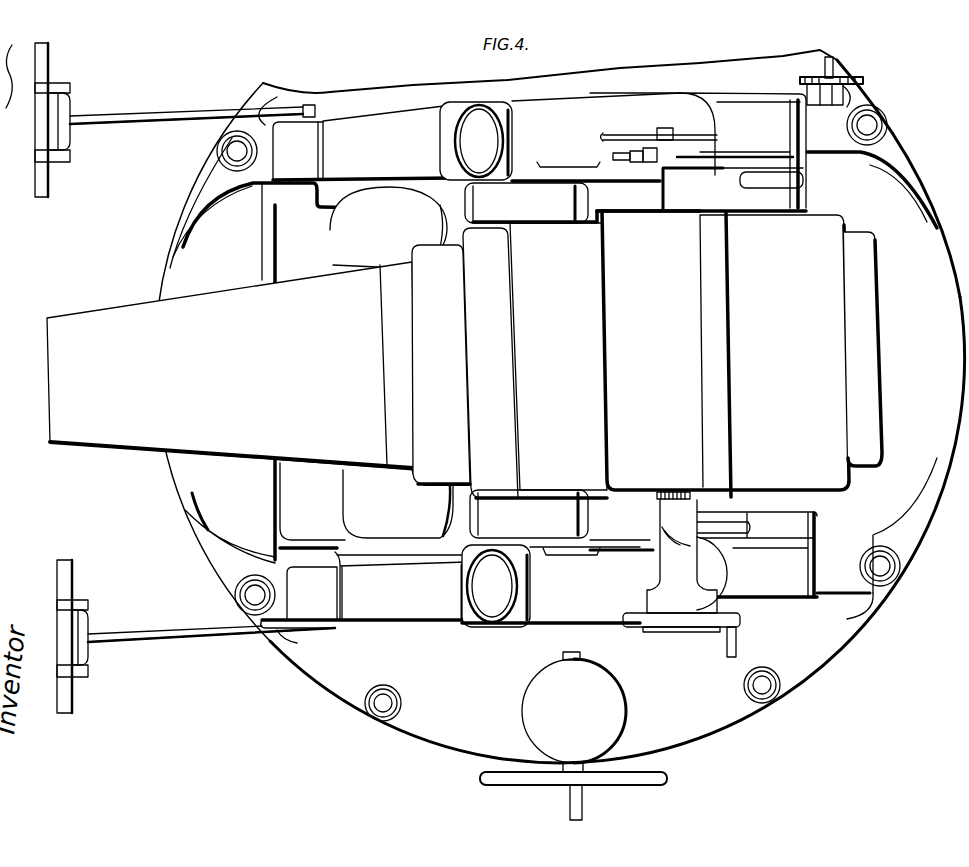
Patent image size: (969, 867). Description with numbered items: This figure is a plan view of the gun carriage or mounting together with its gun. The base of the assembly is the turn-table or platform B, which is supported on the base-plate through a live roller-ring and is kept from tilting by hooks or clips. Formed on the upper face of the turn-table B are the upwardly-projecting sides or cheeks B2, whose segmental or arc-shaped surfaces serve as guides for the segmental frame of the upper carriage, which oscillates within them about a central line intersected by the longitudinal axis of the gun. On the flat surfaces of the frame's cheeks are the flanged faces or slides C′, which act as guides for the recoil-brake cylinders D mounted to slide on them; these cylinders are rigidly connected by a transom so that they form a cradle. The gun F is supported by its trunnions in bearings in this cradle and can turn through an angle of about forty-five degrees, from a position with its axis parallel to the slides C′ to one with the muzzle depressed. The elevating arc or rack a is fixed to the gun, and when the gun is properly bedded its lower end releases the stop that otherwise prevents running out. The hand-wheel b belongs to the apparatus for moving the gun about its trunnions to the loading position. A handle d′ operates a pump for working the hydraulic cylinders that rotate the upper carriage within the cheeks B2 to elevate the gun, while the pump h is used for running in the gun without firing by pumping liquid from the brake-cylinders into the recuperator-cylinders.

The turn-table or platform B is at (560, 406).
The upwardly-projecting sides or cheeks B2 is at (558, 360).
The flanged faces or slides C′ is at (367, 362).
The recoil-brake cylinders D is at (628, 360).
The gun F is at (647, 354).
The elevating arc or rack a is at (673, 491).
The hand-wheel b is at (683, 628).
The handle d′ is at (181, 115).
The pump h is at (690, 165).